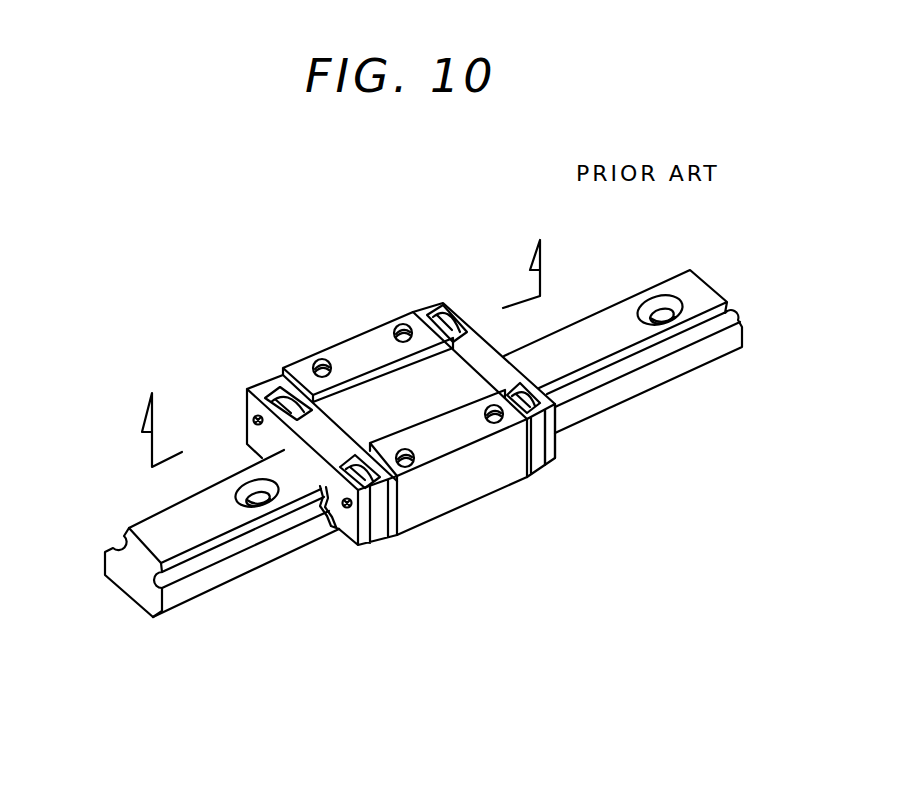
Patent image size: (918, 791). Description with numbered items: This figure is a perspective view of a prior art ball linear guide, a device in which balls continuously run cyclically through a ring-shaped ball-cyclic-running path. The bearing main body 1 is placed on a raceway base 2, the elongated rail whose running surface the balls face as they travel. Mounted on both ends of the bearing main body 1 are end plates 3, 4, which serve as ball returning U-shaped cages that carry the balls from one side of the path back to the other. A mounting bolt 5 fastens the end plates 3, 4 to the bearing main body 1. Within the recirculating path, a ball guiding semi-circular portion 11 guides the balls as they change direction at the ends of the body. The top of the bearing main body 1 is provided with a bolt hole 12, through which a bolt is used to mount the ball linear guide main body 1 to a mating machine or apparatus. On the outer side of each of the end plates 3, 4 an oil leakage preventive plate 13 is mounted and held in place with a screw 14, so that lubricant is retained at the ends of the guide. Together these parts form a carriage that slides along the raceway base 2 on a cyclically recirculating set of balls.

The bearing main body 1 is at (352, 342).
The raceway base 2 is at (609, 312).
The end plate 3 is at (442, 300).
The end plate 4 is at (262, 386).
The mounting bolt 5 is at (549, 430).
The ball guiding semi-circular portion 11 is at (353, 344).
The bolt hole 12 is at (494, 425).
The oil leakage preventive plate 13 is at (240, 430).
The screw 14 is at (346, 510).